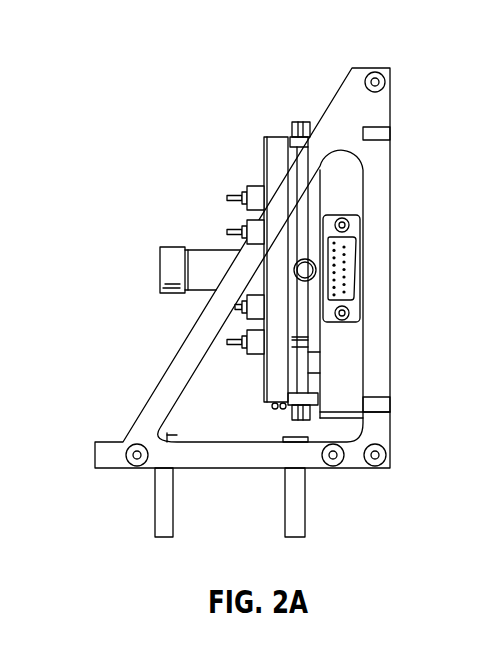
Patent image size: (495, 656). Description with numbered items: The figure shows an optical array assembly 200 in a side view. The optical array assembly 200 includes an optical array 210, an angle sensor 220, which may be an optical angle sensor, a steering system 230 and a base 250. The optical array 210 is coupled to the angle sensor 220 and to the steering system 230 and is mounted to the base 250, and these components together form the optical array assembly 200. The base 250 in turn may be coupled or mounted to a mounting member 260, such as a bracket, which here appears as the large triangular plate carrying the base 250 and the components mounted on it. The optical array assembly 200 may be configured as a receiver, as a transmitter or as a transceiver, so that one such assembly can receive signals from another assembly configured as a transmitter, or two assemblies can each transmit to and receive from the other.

The optical array assembly 200 is at (280, 274).
The optical array 210 is at (312, 118).
The angle sensor 220 is at (170, 247).
The steering system 230 is at (273, 153).
The base 250 is at (348, 377).
The mounting member 260 is at (380, 233).